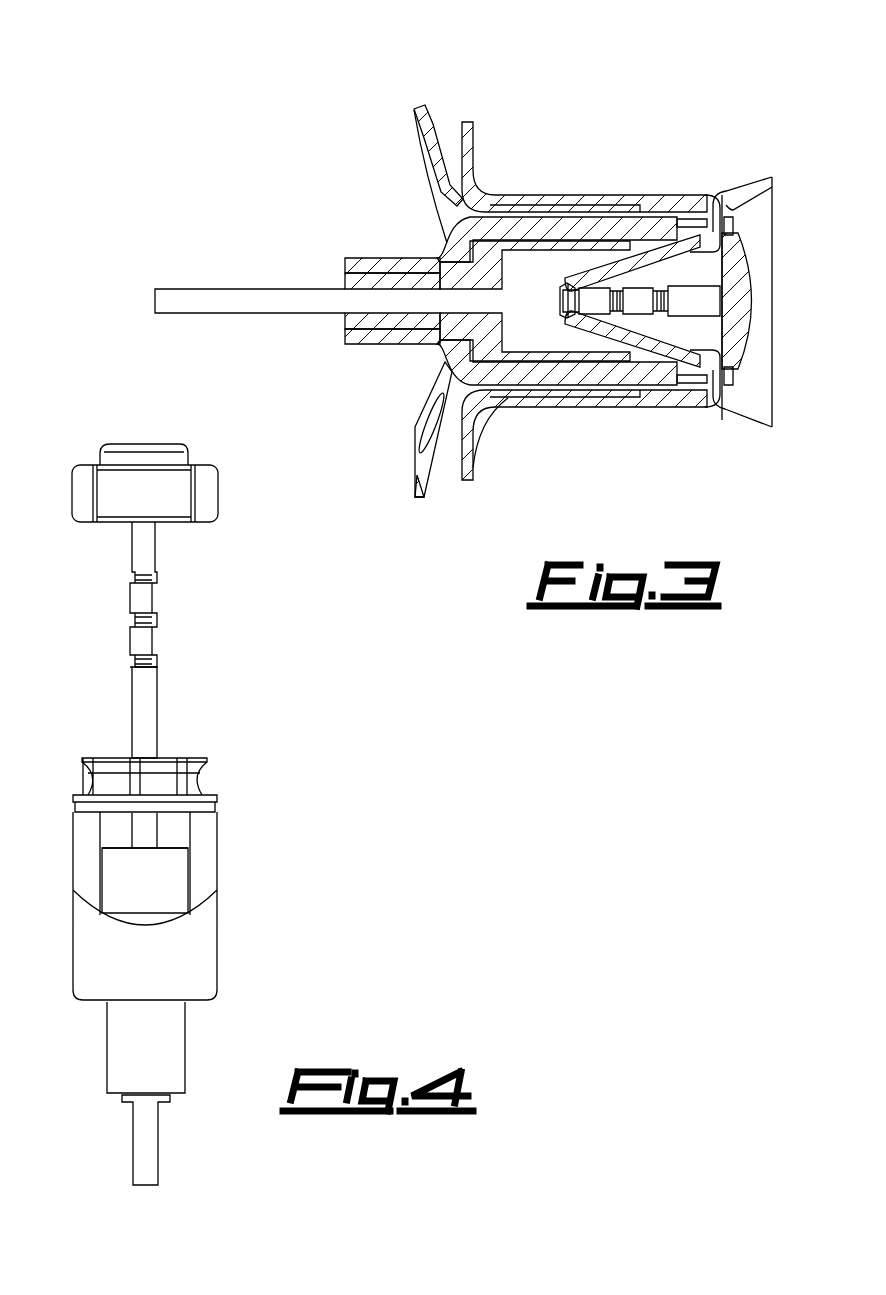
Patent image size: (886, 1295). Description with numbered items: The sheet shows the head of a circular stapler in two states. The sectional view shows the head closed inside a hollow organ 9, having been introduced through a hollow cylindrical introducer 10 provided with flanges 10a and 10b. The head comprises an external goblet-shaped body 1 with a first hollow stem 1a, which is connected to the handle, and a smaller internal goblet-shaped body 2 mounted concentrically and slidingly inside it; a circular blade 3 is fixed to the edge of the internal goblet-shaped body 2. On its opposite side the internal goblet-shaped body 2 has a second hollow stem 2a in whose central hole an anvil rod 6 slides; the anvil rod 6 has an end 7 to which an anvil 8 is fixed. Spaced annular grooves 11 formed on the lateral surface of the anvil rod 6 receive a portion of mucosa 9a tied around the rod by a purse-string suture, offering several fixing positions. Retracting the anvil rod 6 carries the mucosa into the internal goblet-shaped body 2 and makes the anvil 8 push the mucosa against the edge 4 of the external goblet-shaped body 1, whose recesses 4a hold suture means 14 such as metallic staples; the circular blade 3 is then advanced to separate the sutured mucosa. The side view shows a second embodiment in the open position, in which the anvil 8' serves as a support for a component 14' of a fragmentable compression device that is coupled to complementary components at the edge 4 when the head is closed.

In FIG. 3, the external goblet-shaped body 1 is at (525, 377).
In FIG. 4, the external goblet-shaped body 1 is at (153, 973).
In FIG. 3, the first hollow stem 1a is at (413, 270).
In FIG. 4, the first hollow stem 1a is at (178, 1040).
In FIG. 3, the internal goblet-shaped body 2 is at (587, 355).
In FIG. 4, the internal goblet-shaped body 2 is at (153, 896).
In FIG. 3, the second hollow stem 2a is at (373, 280).
In FIG. 4, the second hollow stem 2a is at (123, 1100).
In FIG. 3, the circular blade 3 is at (672, 352).
In FIG. 4, the circular blade 3 is at (158, 852).
In FIG. 3, the edge 4 is at (695, 215).
In FIG. 4, the edge 4 is at (78, 795).
In FIG. 3, the recesses 4a is at (725, 395).
In FIG. 3, the anvil rod 6 is at (248, 300).
In FIG. 4, the anvil rod 6 is at (135, 745).
In FIG. 3, the end 7 is at (710, 300).
In FIG. 4, the end 7 is at (150, 533).
In FIG. 3, the anvil 8 is at (755, 301).
In FIG. 4, the anvil 8' is at (144, 438).
In FIG. 3, the hollow organ 9 is at (540, 200).
In FIG. 3, the mucosa 9a is at (565, 290).
In FIG. 3, the hollow cylindrical introducer 10 is at (580, 207).
In FIG. 3, the flange 10a is at (413, 118).
In FIG. 3, the flange 10b is at (415, 482).
In FIG. 3, the annular grooves 11 is at (663, 287).
In FIG. 4, the annular grooves 11 is at (135, 620).
In FIG. 3, the suture means 14 is at (742, 284).
In FIG. 4, the component of the compression device 14' is at (116, 489).